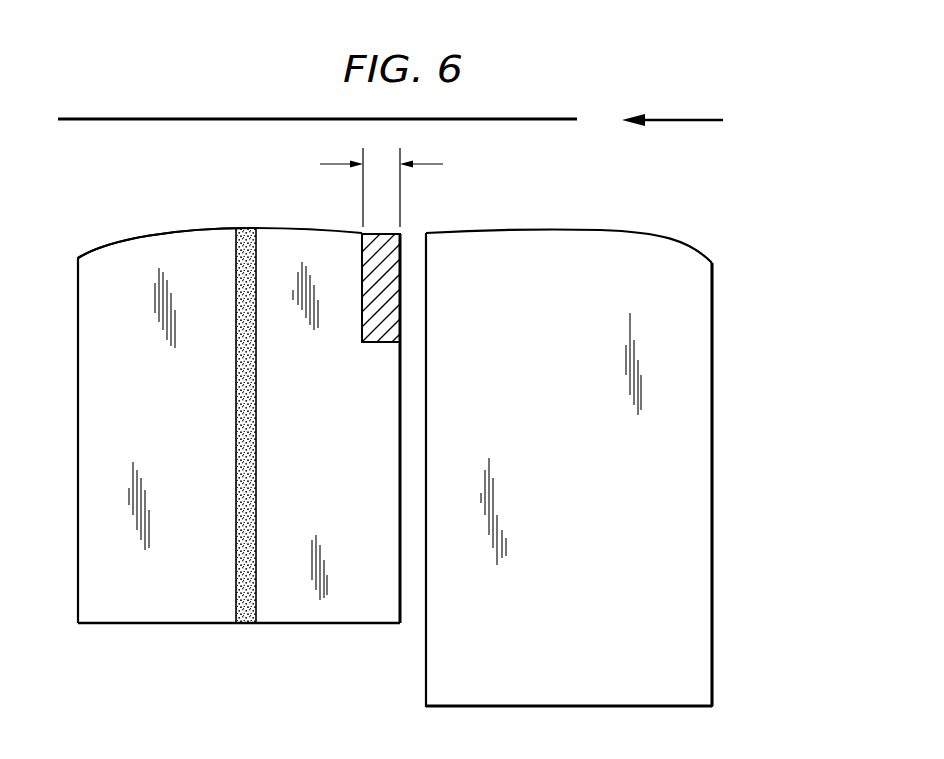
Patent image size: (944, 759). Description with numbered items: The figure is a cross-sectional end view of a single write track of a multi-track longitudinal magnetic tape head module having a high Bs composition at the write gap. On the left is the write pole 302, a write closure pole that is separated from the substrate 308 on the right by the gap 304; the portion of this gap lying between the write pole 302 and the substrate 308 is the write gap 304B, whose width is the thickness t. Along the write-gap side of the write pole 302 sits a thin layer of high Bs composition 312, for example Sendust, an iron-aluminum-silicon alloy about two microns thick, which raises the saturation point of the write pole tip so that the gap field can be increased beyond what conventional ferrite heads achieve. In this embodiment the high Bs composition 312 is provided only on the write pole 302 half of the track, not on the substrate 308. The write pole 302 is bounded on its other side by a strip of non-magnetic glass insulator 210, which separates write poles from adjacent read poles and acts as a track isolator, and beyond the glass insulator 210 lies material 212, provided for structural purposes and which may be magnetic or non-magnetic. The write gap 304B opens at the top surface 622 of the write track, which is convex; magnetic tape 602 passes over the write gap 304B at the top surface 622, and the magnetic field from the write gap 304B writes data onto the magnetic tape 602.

The magnetic tape 602 is at (543, 119).
The top surface 622 is at (213, 229).
The material 212 is at (172, 436).
The glass insulator 210 is at (240, 623).
The write pole 302 is at (341, 517).
The high Bs composition 312 is at (375, 342).
The gap 304 is at (418, 413).
The write gap 304B is at (416, 212).
The substrate 308 is at (584, 504).